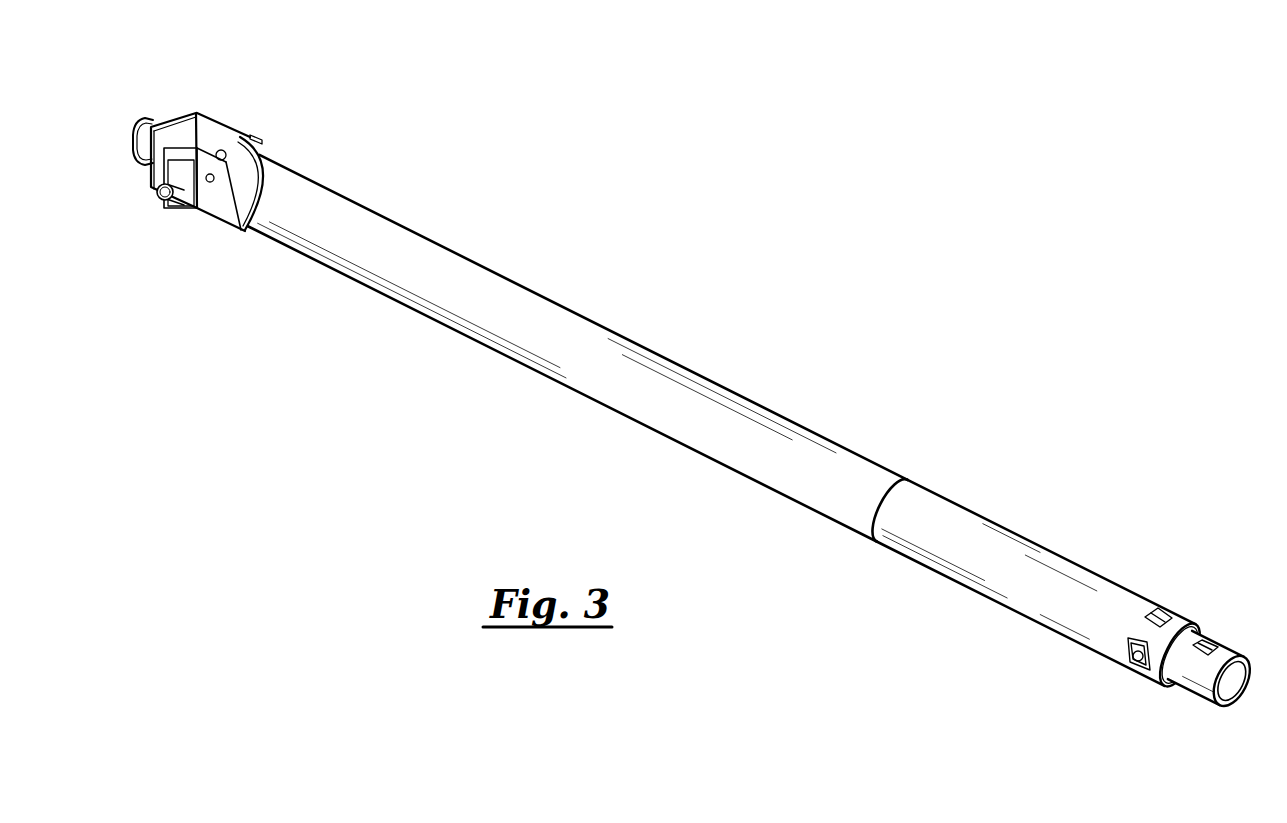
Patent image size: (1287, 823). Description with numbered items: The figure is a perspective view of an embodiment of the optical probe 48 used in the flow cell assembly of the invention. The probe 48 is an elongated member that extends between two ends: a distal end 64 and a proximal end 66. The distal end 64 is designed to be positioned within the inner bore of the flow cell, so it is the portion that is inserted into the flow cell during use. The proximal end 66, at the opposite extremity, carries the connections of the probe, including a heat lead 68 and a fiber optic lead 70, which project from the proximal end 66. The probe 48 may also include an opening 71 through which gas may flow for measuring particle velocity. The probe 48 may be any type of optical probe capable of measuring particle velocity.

The optical probe 48 is at (613, 278).
The distal end 64 is at (1195, 625).
The proximal end 66 is at (223, 120).
The heat lead 68 is at (158, 200).
The fiber optic lead 70 is at (140, 130).
The opening 71 is at (1125, 660).